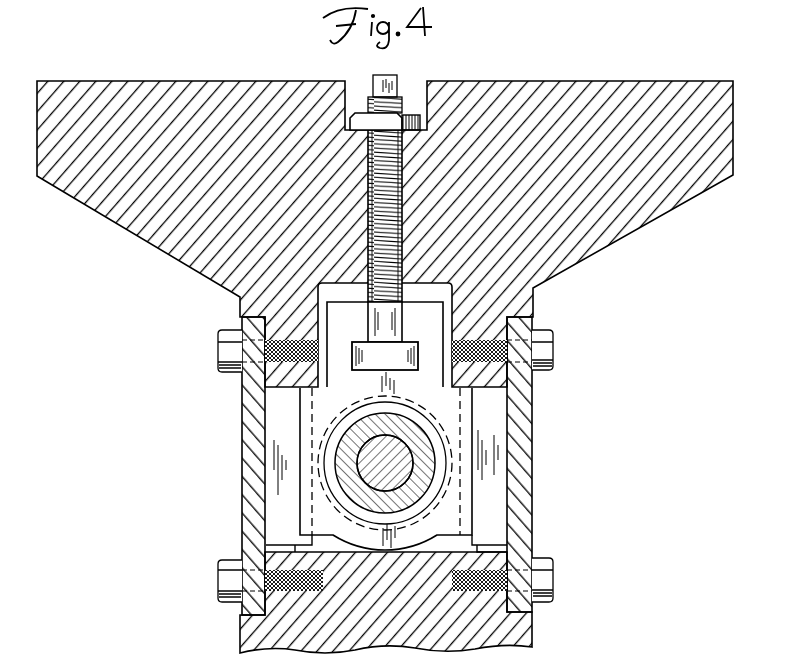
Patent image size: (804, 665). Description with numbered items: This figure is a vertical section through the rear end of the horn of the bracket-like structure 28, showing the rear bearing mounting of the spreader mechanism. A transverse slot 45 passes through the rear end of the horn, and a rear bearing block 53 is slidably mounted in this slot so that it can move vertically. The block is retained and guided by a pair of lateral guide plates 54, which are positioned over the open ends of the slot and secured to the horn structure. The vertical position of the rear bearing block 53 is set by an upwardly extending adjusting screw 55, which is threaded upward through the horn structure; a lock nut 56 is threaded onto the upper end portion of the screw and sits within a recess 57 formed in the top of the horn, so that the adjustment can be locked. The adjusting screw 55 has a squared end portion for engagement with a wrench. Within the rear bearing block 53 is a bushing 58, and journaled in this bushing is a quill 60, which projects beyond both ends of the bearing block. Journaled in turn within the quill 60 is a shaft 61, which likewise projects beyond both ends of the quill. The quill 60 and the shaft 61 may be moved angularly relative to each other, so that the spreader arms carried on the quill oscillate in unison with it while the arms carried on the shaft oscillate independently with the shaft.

The bracket-like structure 28 is at (632, 232).
The transverse slot 45 is at (327, 548).
The rear bearing block 53 is at (473, 407).
The lateral guide plates 54 is at (280, 483).
The adjusting screw 55 is at (398, 100).
The lock nut 56 is at (362, 112).
The recess 57 is at (423, 92).
The bushing 58 is at (430, 495).
The quill 60 is at (355, 433).
The shaft 61 is at (377, 452).